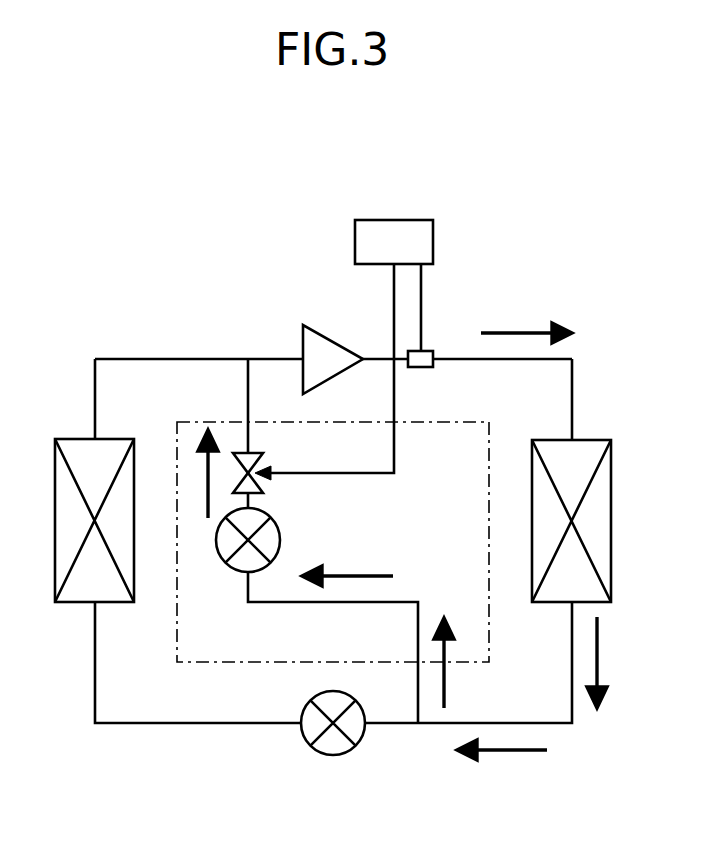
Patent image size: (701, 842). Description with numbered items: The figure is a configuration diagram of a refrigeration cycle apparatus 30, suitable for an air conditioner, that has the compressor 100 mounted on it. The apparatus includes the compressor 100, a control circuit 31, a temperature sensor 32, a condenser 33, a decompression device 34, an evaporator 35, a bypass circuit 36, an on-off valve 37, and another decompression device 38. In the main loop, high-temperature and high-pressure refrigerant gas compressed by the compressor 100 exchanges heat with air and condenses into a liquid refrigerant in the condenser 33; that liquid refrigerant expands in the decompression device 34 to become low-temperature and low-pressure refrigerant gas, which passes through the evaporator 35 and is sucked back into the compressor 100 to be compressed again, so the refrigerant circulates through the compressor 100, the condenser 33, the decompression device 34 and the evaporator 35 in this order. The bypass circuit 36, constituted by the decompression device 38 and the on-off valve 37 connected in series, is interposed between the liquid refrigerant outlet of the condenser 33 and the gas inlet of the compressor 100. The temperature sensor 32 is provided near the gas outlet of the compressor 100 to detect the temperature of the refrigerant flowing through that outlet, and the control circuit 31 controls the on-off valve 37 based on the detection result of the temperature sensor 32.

The refrigeration cycle apparatus 30 is at (594, 166).
The control circuit 31 is at (434, 240).
The temperature sensor 32 is at (423, 348).
The condenser 33 is at (587, 438).
The decompression device 34 is at (331, 757).
The evaporator 35 is at (80, 438).
The bypass circuit 36 is at (467, 420).
The on-off valve 37 is at (258, 481).
The decompression device 38 is at (282, 538).
The compressor 100 is at (330, 339).